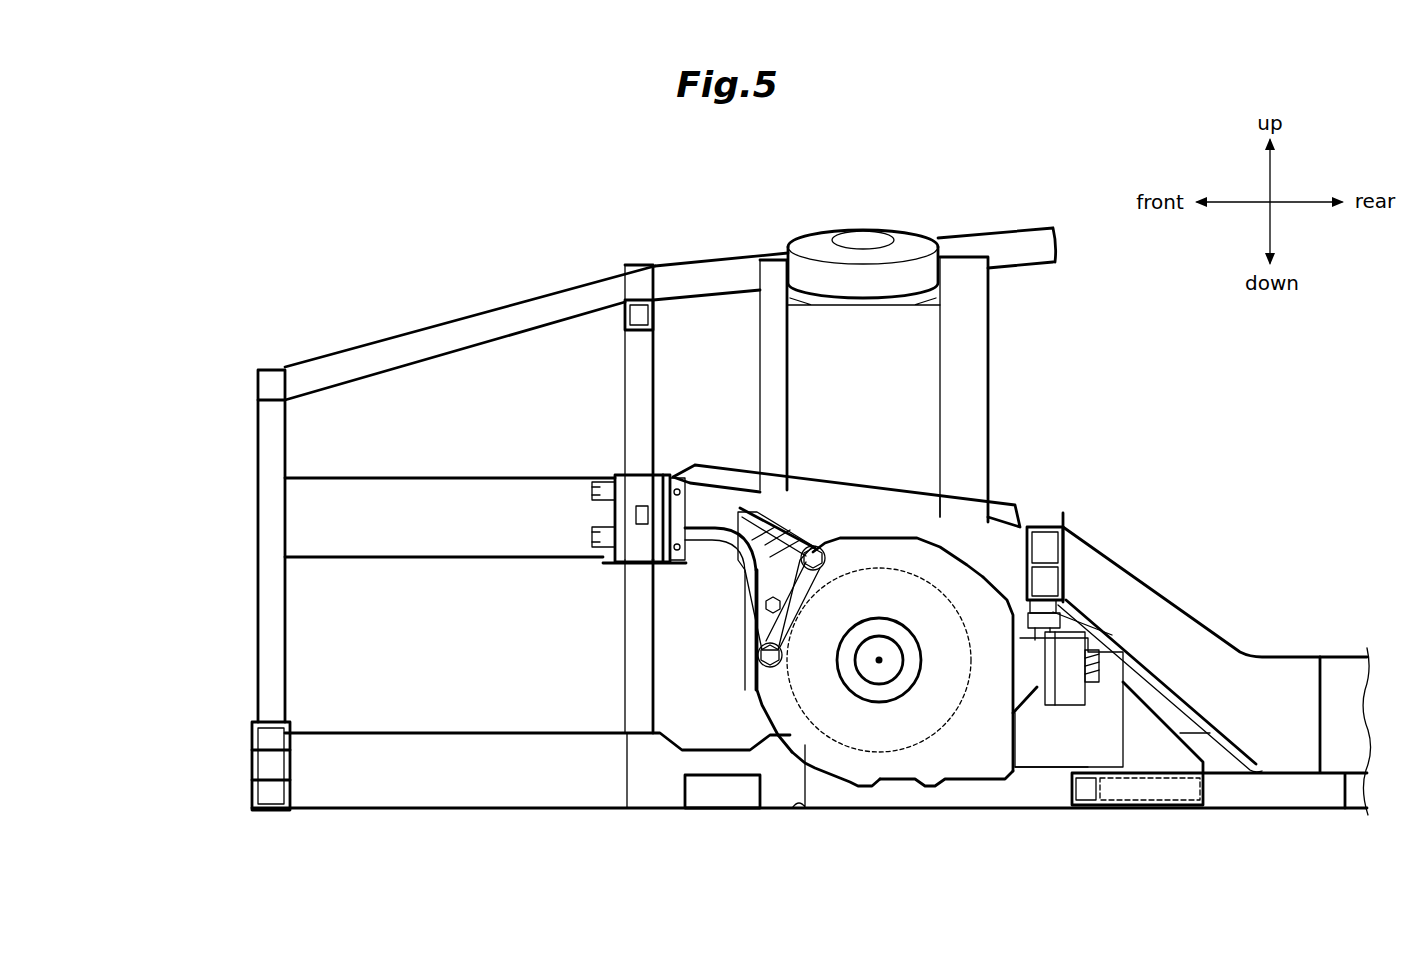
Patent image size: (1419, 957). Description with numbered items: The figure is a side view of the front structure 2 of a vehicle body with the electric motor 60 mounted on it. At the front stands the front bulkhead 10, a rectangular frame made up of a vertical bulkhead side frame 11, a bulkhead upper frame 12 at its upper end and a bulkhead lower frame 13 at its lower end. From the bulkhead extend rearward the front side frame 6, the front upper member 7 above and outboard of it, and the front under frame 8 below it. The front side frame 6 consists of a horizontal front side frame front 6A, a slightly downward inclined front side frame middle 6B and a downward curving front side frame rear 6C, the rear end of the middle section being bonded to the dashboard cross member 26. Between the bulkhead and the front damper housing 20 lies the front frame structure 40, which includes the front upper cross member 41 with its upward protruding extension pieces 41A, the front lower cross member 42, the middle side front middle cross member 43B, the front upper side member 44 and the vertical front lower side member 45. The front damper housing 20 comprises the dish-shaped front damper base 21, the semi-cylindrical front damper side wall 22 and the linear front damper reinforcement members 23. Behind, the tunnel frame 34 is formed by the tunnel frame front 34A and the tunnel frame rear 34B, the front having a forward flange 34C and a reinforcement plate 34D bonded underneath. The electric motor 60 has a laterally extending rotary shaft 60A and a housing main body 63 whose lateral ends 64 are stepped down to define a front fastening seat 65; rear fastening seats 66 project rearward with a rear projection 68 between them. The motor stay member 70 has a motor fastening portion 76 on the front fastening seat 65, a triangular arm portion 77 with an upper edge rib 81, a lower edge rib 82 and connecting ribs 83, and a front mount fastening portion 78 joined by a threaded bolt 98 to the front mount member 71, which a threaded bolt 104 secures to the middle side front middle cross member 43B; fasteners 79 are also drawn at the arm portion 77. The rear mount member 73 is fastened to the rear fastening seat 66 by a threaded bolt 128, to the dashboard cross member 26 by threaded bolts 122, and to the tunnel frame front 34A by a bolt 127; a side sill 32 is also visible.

The front structure 2 is at (500, 230).
The front side frame 6 is at (403, 487).
The front side frame front 6A is at (377, 550).
The front side frame middle 6B is at (892, 515).
The front side frame rear 6C is at (1162, 740).
The front upper member 7 is at (447, 325).
The front under frame 8 is at (390, 798).
The front bulkhead 10 is at (259, 367).
The bulkhead side frame 11 is at (255, 596).
The bulkhead upper frame 12 is at (278, 370).
The bulkhead lower frame 13 is at (255, 762).
The front damper housing 20 is at (870, 231).
The front damper base 21 is at (822, 238).
The front damper side wall 22 is at (803, 370).
The front damper reinforcement member 23 is at (772, 272).
The dashboard cross member 26 is at (1040, 525).
The rear mount 32 is at (1150, 808).
The tunnel frame 34 is at (1282, 660).
The tunnel frame front 34A is at (1148, 580).
The tunnel frame rear 34B is at (1350, 672).
The flange 34C is at (1063, 530).
The reinforcement plate 34D is at (1092, 605).
The front frame structure 40 is at (623, 352).
The front upper cross member 41 is at (618, 318).
The extension piece 41A is at (655, 290).
The front lower cross member 42 is at (675, 790).
The middle side front middle cross member 43B is at (612, 565).
The front upper side member 44 is at (632, 408).
The front lower side member 45 is at (640, 676).
The electric motor 60 is at (942, 770).
The rotary shaft 60A is at (880, 660).
The housing main body 63 is at (840, 760).
The lateral end 64 is at (893, 690).
The front fastening seat 65 is at (790, 705).
The rear fastening seat 66 is at (1025, 778).
The rear projection 68 is at (1120, 745).
The motor stay member 70 is at (795, 529).
The front mount member 71 is at (668, 471).
The rear mount member 73 is at (1047, 705).
The motor fastening portion 76 is at (765, 630).
The arm portion 77 is at (700, 528).
The front mount fastening portion 78 is at (693, 512).
The bolt 79 is at (820, 548).
The upper edge rib 81 is at (755, 535).
The lower edge rib 82 is at (757, 602).
The connecting rib 83 is at (745, 567).
The threaded bolt 98 is at (597, 516).
The threaded bolt 104 is at (597, 540).
The threaded bolt 122 is at (995, 705).
The bolt 127 is at (1168, 665).
The threaded bolt 128 is at (1086, 682).